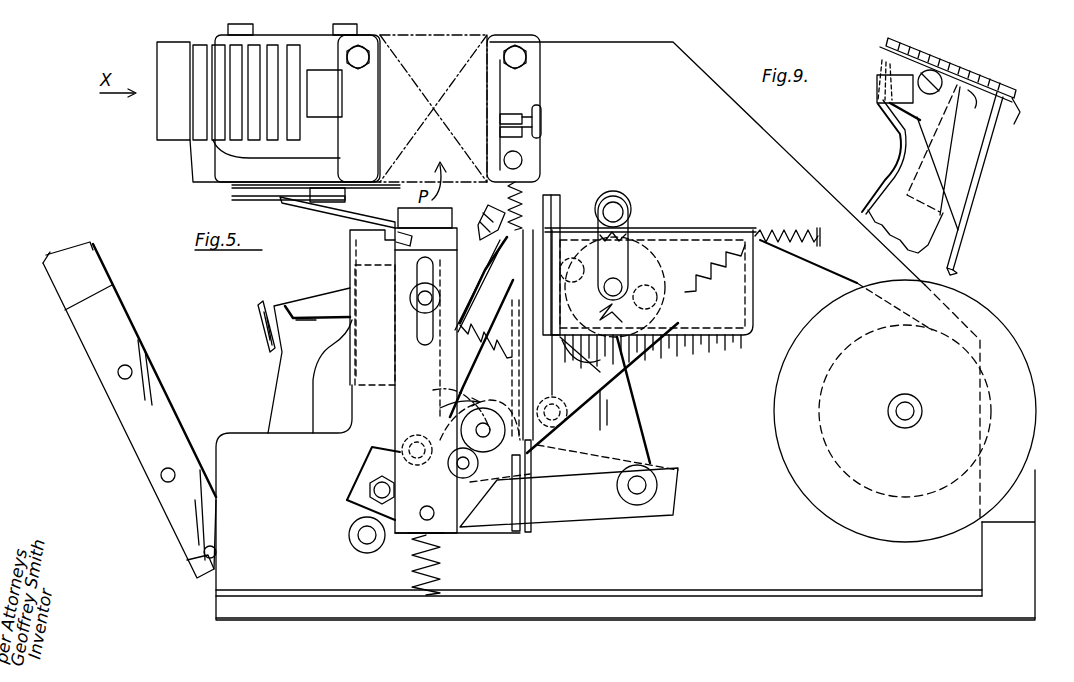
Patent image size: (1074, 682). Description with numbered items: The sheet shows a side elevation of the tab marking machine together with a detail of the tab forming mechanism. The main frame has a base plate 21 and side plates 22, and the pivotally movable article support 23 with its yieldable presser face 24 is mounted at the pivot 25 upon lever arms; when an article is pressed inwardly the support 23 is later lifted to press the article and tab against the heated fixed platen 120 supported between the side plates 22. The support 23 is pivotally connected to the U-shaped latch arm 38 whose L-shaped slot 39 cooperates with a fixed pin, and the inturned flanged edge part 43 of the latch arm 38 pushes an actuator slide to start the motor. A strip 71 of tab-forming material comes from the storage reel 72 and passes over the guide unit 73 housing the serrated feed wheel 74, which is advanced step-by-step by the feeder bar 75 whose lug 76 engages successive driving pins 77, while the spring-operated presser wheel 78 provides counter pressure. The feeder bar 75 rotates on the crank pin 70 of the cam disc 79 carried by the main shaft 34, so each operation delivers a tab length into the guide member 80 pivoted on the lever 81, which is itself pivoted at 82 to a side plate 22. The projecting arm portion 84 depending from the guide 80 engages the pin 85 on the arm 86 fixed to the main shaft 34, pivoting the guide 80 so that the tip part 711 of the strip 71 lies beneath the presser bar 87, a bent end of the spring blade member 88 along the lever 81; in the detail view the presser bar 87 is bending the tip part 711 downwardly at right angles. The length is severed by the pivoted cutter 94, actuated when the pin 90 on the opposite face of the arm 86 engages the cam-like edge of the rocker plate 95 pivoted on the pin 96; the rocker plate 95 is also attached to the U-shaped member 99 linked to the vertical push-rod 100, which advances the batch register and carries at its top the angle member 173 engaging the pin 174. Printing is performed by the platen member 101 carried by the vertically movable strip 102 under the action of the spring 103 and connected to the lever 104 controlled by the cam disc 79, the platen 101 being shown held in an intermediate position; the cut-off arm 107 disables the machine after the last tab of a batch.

In FIG. 5, the base plate 21 is at (580, 598).
In FIG. 5, the side plate 22 is at (695, 88).
In FIG. 5, the article support 23 is at (100, 362).
In FIG. 5, the yieldable presser face 24 is at (80, 248).
In FIG. 5, the pivot 25 is at (185, 570).
In FIG. 5, the main shaft 34 is at (478, 430).
In FIG. 5, the latch arm 38 is at (283, 390).
In FIG. 5, the L-shaped slot 39 is at (292, 306).
In FIG. 5, the inturned flanged edge part 43 is at (264, 316).
In FIG. 5, the crank pin 70 is at (478, 530).
In FIG. 5, the strip 71 is at (846, 285).
In FIG. 9, the strip 71 is at (1026, 118).
In FIG. 5, the storage reel 72 is at (980, 312).
In FIG. 5, the guide unit 73 is at (740, 338).
In FIG. 5, the feed wheel 74 is at (660, 255).
In FIG. 5, the feeder bar 75 is at (648, 352).
In FIG. 5, the lug 76 is at (600, 368).
In FIG. 5, the driving pins 77 is at (560, 240).
In FIG. 5, the presser wheel 78 is at (610, 200).
In FIG. 5, the cam disc 79 is at (440, 400).
In FIG. 5, the guide member 80 is at (535, 212).
In FIG. 9, the guide member 80 is at (940, 84).
In FIG. 5, the lever 81 is at (460, 362).
In FIG. 9, the lever 81 is at (942, 236).
In FIG. 5, the pivot 82 is at (372, 490).
In FIG. 5, the projecting arm portion 84 is at (542, 530).
In FIG. 9, the projecting arm portion 84 is at (962, 260).
In FIG. 5, the pin 85 is at (410, 451).
In FIG. 5, the arm 86 is at (540, 396).
In FIG. 9, the presser bar 87 is at (876, 58).
In FIG. 5, the spring blade member 88 is at (490, 244).
In FIG. 9, the spring blade member 88 is at (895, 150).
In FIG. 5, the pin 90 is at (615, 432).
In FIG. 5, the cutter 94 is at (558, 202).
In FIG. 5, the rocker plate 95 is at (620, 416).
In FIG. 5, the pin 96 is at (640, 505).
In FIG. 5, the U-shaped member 99 is at (680, 495).
In FIG. 5, the push-rod 100 is at (526, 532).
In FIG. 5, the platen member 101 is at (448, 220).
In FIG. 5, the strip 102 is at (432, 270).
In FIG. 5, the spring 103 is at (442, 580).
In FIG. 5, the lever 104 is at (495, 535).
In FIG. 5, the cut-off arm 107 is at (541, 140).
In FIG. 5, the heated fixed platen 120 is at (203, 163).
In FIG. 5, the angle member 173 is at (505, 118).
In FIG. 5, the pin 174 is at (522, 132).
In FIG. 9, the tip part 711 is at (890, 48).